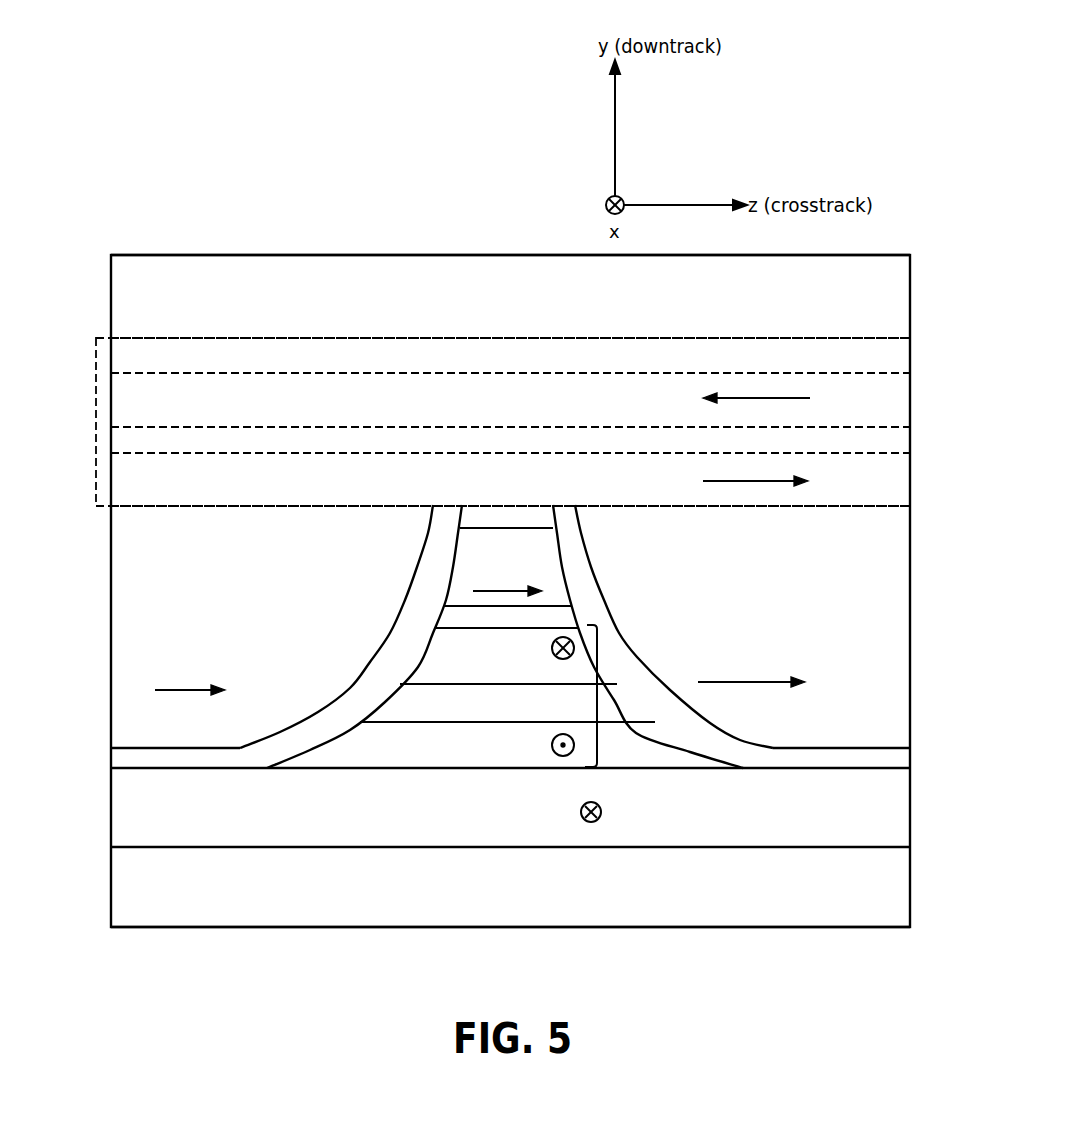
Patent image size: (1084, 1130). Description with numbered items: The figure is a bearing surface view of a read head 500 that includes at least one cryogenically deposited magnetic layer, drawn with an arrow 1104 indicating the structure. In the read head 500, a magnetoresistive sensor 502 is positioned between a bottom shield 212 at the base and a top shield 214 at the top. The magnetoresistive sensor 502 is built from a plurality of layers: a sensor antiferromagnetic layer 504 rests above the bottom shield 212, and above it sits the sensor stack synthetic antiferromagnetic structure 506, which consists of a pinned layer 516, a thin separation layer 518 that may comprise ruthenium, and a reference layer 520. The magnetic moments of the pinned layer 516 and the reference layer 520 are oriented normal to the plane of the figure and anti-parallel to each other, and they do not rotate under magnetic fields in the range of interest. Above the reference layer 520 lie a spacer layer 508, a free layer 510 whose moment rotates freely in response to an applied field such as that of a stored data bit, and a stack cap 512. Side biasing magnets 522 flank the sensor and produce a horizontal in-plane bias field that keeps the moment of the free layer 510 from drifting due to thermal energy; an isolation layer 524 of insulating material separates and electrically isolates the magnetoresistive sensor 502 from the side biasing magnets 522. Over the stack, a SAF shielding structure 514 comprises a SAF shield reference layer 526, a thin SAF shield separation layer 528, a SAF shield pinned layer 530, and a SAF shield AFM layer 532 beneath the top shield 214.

The read head 500 is at (394, 192).
The shield structure 1104 is at (940, 278).
The top shield 214 is at (640, 306).
The bottom shield 212 is at (560, 899).
The magnetoresistive sensor 502 is at (84, 714).
The sensor antiferromagnetic layer 504 is at (560, 826).
The sensor stack synthetic antiferromagnetic structure 506 is at (598, 697).
The spacer layer 508 is at (453, 615).
The free layer 510 is at (467, 572).
The stack cap 512 is at (465, 512).
The SAF shielding structure 514 is at (96, 423).
The pinned layer 516 is at (388, 747).
The separation layer 518 is at (407, 707).
The reference layer 520 is at (447, 653).
The side biasing magnets 522 is at (237, 622).
The isolation layer 524 is at (383, 663).
The SAF shield reference layer 526 is at (640, 490).
The SAF shield separation layer 528 is at (640, 451).
The SAF shield pinned layer 530 is at (640, 411).
The SAF shield AFM layer 532 is at (640, 364).